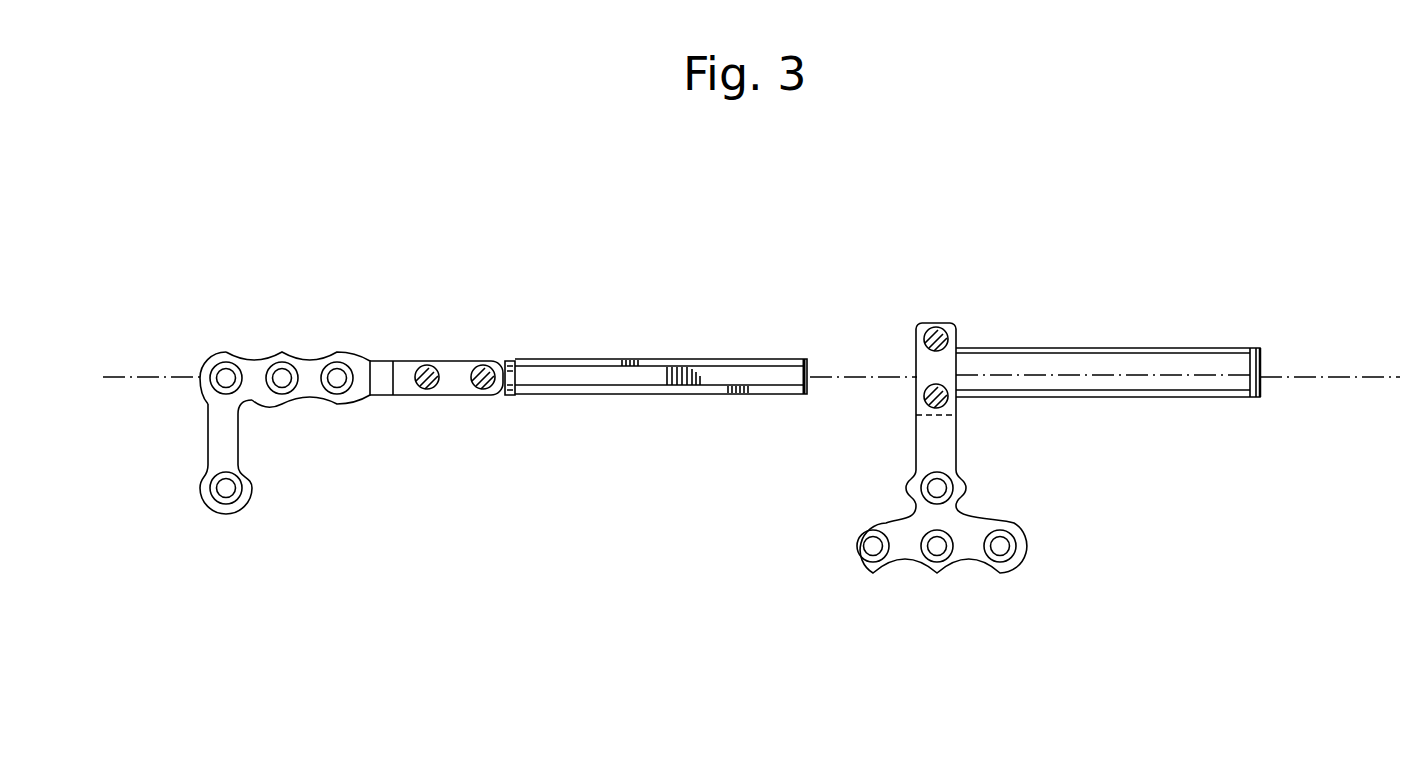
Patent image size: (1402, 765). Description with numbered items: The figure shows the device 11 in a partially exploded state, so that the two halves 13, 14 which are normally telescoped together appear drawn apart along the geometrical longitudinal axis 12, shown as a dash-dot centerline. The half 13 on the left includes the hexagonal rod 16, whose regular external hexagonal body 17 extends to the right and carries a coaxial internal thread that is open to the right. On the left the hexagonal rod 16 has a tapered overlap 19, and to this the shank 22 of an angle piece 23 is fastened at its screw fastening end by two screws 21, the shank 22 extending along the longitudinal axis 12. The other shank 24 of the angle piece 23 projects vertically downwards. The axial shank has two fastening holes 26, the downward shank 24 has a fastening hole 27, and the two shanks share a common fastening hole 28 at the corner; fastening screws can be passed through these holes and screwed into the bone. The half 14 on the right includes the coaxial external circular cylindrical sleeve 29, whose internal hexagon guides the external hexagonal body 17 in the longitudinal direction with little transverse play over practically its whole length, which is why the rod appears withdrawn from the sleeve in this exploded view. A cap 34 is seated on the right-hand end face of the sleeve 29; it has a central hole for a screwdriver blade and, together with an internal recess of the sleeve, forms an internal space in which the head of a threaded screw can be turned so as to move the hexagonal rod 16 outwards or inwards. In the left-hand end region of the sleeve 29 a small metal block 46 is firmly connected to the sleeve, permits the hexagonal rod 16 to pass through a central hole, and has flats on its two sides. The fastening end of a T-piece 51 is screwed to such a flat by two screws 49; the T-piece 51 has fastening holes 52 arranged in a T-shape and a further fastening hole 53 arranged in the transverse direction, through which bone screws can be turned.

The device 11 is at (885, 171).
The geometrical longitudinal axis 12 is at (152, 378).
The half 13 is at (531, 256).
The half 14 is at (1099, 256).
The hexagonal rod 16 is at (727, 357).
The external hexagonal body 17 is at (593, 359).
The tapered overlap 19 is at (497, 396).
The screws 21 is at (481, 365).
The shank 22 is at (319, 431).
The angle piece 23 is at (294, 428).
The shank 24 is at (222, 442).
The fastening holes 26 is at (282, 380).
The fastening hole 27 is at (226, 492).
The fastening hole 28 is at (226, 372).
The external circular cylindrical sleeve 29 is at (1168, 348).
The cap 34 is at (1262, 380).
The metal block 46 is at (917, 408).
The screws 49 is at (940, 387).
The T-piece 51 is at (975, 452).
The fastening holes 52 is at (875, 548).
The fastening hole 53 is at (930, 488).